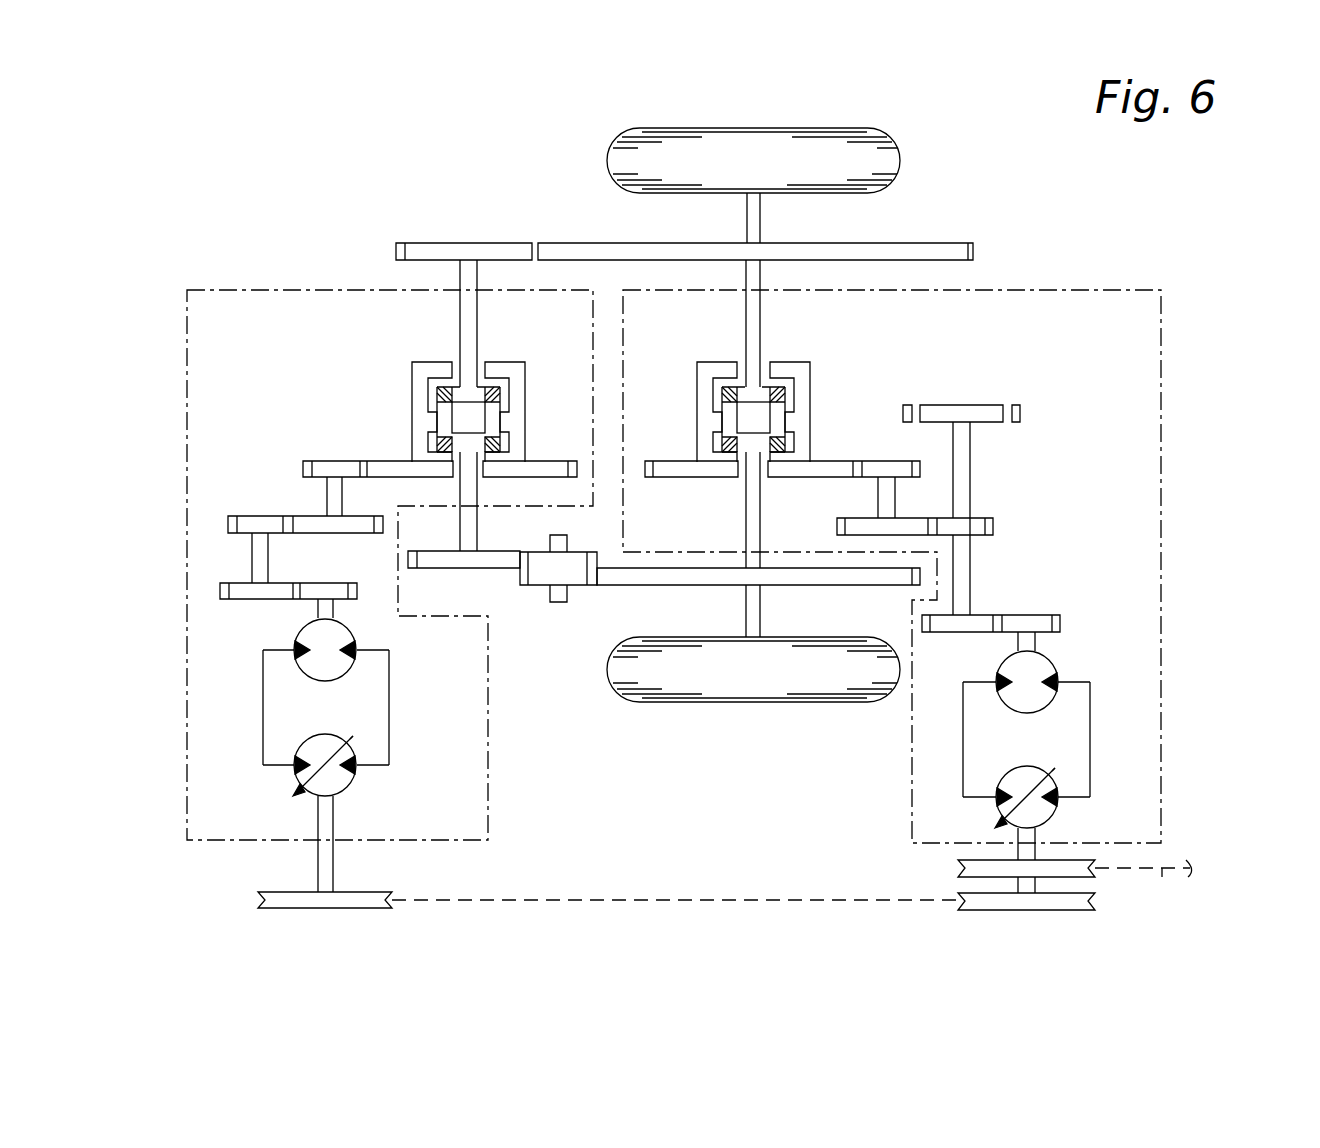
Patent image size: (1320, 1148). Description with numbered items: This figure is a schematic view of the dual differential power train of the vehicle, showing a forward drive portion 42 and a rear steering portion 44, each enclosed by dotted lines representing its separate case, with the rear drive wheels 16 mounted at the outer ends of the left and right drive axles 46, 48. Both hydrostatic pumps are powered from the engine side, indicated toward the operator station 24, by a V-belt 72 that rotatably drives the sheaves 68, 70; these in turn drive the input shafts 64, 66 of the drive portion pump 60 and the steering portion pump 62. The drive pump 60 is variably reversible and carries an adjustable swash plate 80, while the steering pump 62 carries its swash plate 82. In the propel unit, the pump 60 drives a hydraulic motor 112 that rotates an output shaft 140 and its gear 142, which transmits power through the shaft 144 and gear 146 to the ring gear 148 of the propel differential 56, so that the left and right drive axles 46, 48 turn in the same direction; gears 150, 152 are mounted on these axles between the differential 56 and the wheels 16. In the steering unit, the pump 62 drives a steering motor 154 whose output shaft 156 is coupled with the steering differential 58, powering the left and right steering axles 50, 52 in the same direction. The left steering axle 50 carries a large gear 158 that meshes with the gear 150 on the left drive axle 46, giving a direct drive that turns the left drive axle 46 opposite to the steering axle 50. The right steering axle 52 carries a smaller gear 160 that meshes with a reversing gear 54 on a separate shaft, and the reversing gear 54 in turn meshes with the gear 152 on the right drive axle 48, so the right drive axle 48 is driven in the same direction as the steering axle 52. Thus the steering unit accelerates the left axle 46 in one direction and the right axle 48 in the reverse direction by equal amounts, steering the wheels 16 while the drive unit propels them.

The rear drive wheels 16 is at (900, 155).
The operator station 24 is at (1162, 870).
The forward drive portion 42 is at (1161, 380).
The rear steering portion 44 is at (305, 290).
The left drive axle 46 is at (760, 330).
The right drive axle 48 is at (746, 503).
The left steering axle 50 is at (460, 325).
The right steering axle 52 is at (478, 530).
The reversing gear 54 is at (578, 587).
The propel differential 56 is at (823, 374).
The steering differential 58 is at (537, 378).
The drive portion hydrostatic pump 60 is at (1053, 812).
The steering portion hydrostatic pump 62 is at (352, 780).
The input shaft 64 is at (1040, 855).
The input shaft 66 is at (335, 825).
The sheave 68 is at (1003, 910).
The sheave 70 is at (363, 908).
The V-belt 72 is at (505, 905).
The swash plate 80 is at (1042, 768).
The swash plate 82 is at (345, 735).
The hydraulic motor 112 is at (1050, 710).
The output shaft 140 is at (1043, 648).
The gear 142 is at (1043, 615).
The shaft 144 is at (970, 573).
The gear 146 is at (978, 518).
The ring gear 148 is at (840, 461).
The gear 150 is at (963, 243).
The gear 152 is at (813, 585).
The steering motor 154 is at (352, 628).
The output shaft 156 is at (317, 612).
The large gear 158 is at (493, 243).
The smaller gear 160 is at (440, 568).